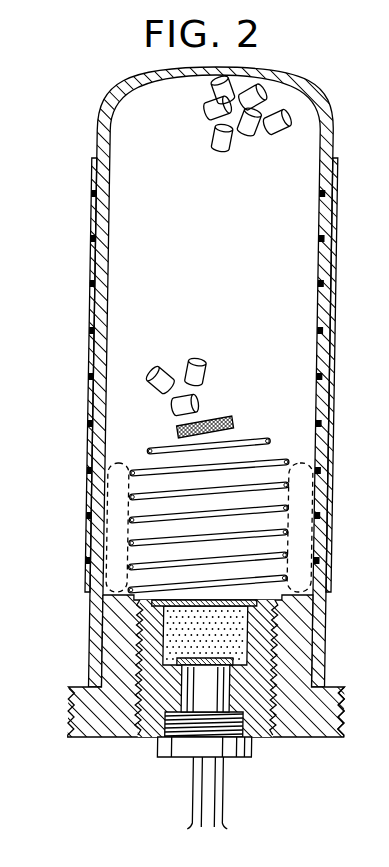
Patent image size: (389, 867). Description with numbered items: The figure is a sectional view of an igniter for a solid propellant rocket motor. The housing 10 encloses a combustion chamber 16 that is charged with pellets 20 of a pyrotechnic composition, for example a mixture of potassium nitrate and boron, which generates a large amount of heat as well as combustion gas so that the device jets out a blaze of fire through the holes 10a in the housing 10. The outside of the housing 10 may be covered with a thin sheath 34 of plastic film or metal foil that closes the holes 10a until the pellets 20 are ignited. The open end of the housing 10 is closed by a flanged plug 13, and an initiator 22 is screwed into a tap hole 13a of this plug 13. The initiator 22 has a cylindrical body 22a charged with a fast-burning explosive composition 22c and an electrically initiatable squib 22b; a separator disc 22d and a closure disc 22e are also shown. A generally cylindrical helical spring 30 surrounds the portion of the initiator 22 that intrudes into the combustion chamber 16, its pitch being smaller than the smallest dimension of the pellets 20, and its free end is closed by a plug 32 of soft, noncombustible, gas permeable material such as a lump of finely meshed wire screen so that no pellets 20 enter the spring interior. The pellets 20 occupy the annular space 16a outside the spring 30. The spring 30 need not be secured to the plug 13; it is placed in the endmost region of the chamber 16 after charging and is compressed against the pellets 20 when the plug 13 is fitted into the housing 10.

The housing 10 is at (321, 156).
The holes 10a is at (98, 285).
The sheath 34 is at (326, 353).
The combustion chamber 16 is at (181, 234).
The annular space 16a is at (112, 497).
The pellets 20 is at (281, 120).
The helical spring 30 is at (158, 450).
The plug 32 is at (223, 420).
The flanged plug 13 is at (107, 720).
The tap hole 13a is at (296, 714).
The initiator 22 is at (158, 744).
The cylindrical body 22a is at (268, 732).
The squib 22b is at (202, 690).
The fast-burning explosive composition 22c is at (251, 633).
The separator disc 22d is at (176, 653).
The closure disc 22e is at (177, 619).